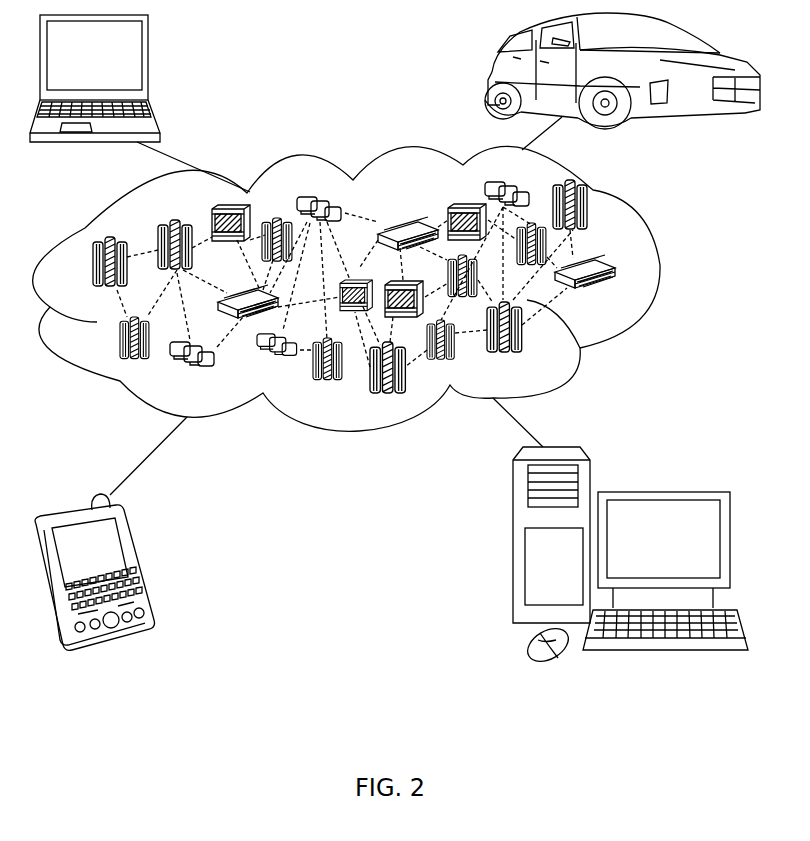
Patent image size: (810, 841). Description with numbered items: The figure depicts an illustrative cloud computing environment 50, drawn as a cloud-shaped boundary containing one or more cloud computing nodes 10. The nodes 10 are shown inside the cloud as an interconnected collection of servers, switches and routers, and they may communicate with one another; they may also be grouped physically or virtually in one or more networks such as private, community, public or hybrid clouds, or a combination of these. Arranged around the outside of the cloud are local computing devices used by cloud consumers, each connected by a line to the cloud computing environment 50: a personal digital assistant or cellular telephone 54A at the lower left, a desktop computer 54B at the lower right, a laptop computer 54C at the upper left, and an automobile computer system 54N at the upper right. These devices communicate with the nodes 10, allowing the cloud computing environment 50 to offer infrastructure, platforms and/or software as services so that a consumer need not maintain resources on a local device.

The cloud computing nodes 10 is at (617, 293).
The cloud computing environment 50 is at (662, 268).
The personal digital assistant or cellular telephone 54A is at (138, 562).
The desktop computer 54B is at (673, 475).
The laptop computer 54C is at (150, 57).
The automobile computer system 54N is at (488, 68).